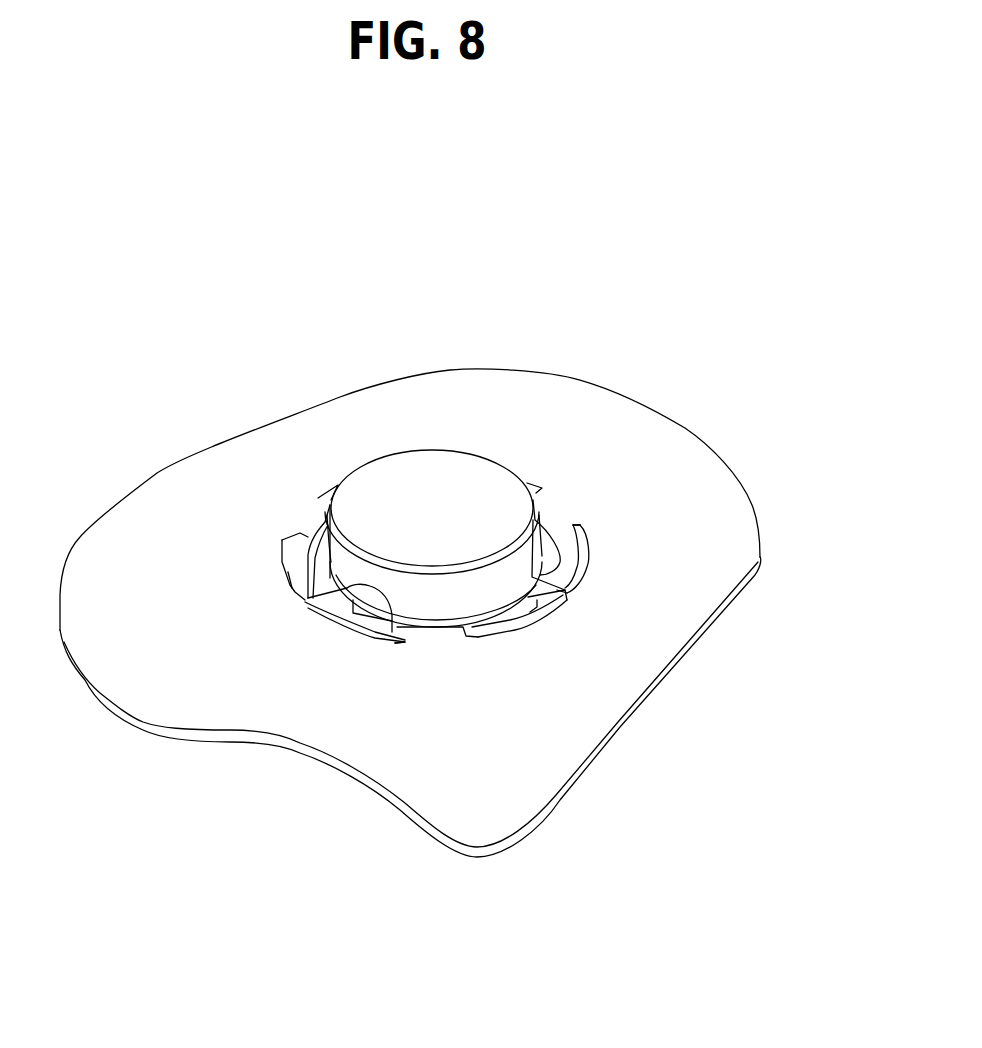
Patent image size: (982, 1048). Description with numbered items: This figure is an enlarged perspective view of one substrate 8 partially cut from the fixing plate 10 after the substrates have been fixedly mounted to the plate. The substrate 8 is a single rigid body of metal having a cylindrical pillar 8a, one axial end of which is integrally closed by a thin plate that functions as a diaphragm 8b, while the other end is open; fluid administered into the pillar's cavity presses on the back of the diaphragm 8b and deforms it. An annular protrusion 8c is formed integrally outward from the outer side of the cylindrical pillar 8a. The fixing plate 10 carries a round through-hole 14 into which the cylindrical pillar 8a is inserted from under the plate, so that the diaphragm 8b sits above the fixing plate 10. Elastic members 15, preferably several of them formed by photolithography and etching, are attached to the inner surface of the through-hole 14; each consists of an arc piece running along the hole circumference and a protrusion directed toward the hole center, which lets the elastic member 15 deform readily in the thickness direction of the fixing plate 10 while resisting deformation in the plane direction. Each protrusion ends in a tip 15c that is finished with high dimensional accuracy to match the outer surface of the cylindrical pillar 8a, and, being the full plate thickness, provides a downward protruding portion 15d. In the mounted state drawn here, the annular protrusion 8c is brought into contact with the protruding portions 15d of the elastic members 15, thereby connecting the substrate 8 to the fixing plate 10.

The substrate 8 is at (557, 562).
The cylindrical pillar 8a is at (443, 600).
The diaphragm 8b is at (443, 518).
The annular protrusion 8c is at (503, 617).
The fixing plate 10 is at (212, 465).
The through-hole 14 is at (295, 592).
The elastic member 15 is at (310, 517).
The tip 15c is at (540, 530).
The protruding portion 15d is at (533, 603).